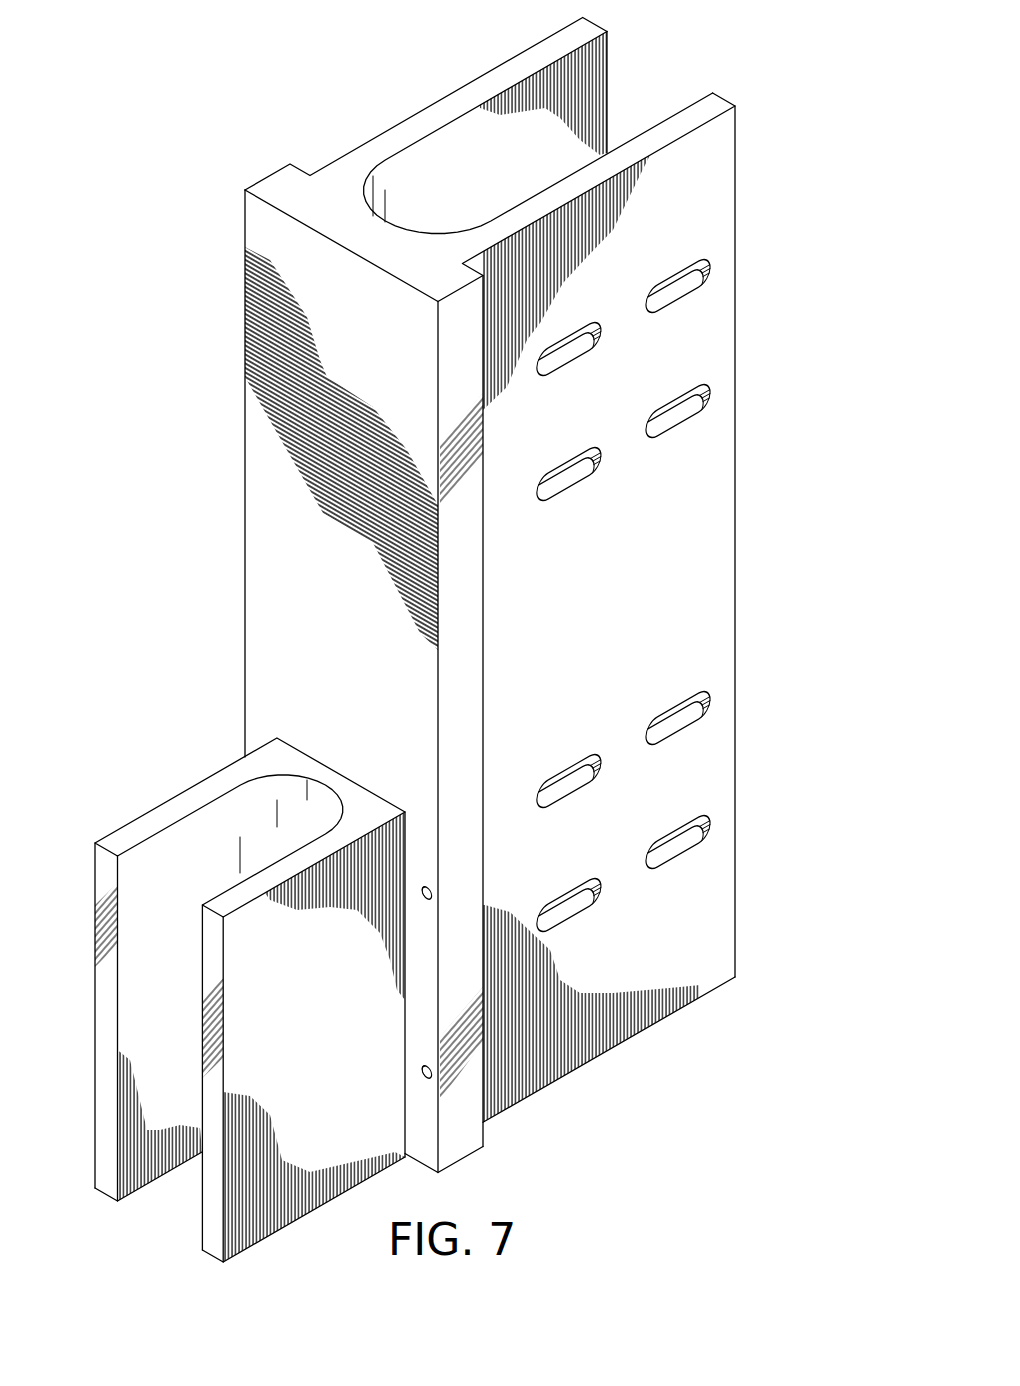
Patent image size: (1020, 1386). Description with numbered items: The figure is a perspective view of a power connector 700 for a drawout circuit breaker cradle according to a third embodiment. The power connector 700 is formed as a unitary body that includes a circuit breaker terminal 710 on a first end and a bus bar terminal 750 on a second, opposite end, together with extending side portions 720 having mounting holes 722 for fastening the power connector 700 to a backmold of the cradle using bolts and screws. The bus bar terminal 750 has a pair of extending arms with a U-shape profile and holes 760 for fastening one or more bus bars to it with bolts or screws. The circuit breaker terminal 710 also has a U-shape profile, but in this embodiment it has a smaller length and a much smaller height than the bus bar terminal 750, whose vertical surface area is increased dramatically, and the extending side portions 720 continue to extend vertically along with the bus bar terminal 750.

The power connector 700 is at (441, 640).
The circuit breaker terminal 710 is at (178, 793).
The extending side portions 720 is at (454, 595).
The mounting holes 722 is at (420, 1077).
The bus bar terminal 750 is at (390, 130).
The holes 760 is at (680, 436).